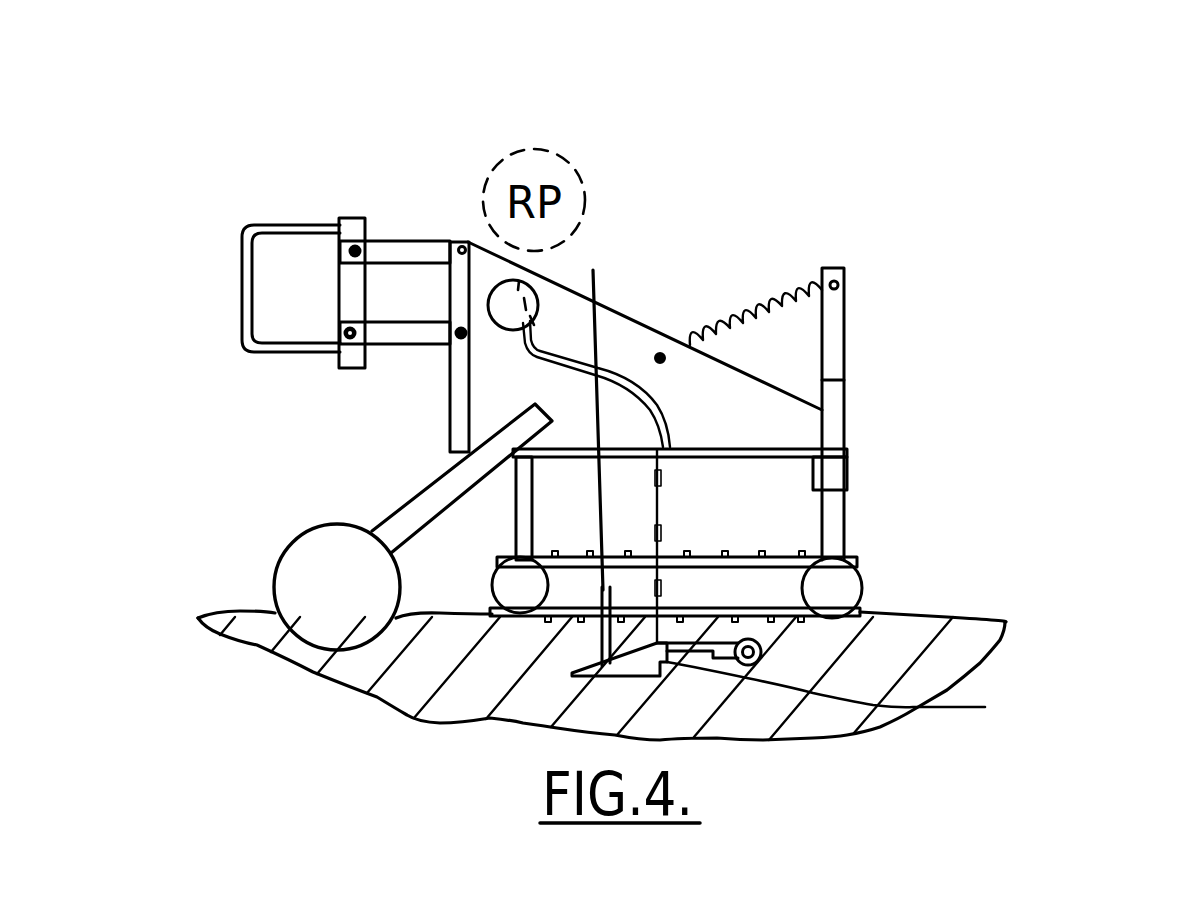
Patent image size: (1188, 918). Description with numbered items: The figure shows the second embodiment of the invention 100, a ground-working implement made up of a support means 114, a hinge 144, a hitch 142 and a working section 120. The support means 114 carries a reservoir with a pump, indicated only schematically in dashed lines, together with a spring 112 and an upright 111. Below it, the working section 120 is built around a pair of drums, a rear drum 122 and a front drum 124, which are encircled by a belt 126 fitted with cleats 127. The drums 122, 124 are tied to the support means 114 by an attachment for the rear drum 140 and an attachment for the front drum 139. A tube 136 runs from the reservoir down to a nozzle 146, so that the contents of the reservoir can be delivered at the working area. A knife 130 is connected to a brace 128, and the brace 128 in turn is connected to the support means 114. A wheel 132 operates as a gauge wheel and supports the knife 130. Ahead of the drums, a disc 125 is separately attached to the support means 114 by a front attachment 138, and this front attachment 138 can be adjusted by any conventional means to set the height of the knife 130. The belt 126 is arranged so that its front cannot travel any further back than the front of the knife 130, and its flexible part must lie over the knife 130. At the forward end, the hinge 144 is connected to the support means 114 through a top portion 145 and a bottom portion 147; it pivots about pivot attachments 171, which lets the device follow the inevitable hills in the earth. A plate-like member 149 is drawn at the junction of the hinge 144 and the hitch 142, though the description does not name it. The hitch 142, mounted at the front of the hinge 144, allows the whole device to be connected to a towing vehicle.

The second embodiment of the invention 100 is at (733, 120).
The upright 111 is at (836, 318).
The spring 112 is at (728, 318).
The support means 114 is at (685, 222).
The working section 120 is at (963, 527).
The rear drum 122 is at (840, 572).
The front drum 124 is at (340, 687).
The disc 125 is at (282, 580).
The belt 126 is at (695, 557).
The cleats 127 is at (760, 550).
The brace 128 is at (625, 440).
The knife 130 is at (598, 668).
The wheel 132 is at (785, 645).
The tube 136 is at (662, 465).
The front attachment 138 is at (398, 506).
The attachment for the front drum 139 is at (523, 507).
The attachment for the rear drum 140 is at (833, 510).
The hitch 142 is at (243, 289).
The hinge 144 is at (420, 120).
The top portion 145 is at (412, 241).
The nozzle 146 is at (864, 694).
The bottom portion 147 is at (397, 342).
The bracket plate 149 is at (349, 224).
The pivot attachments 171 is at (332, 229).